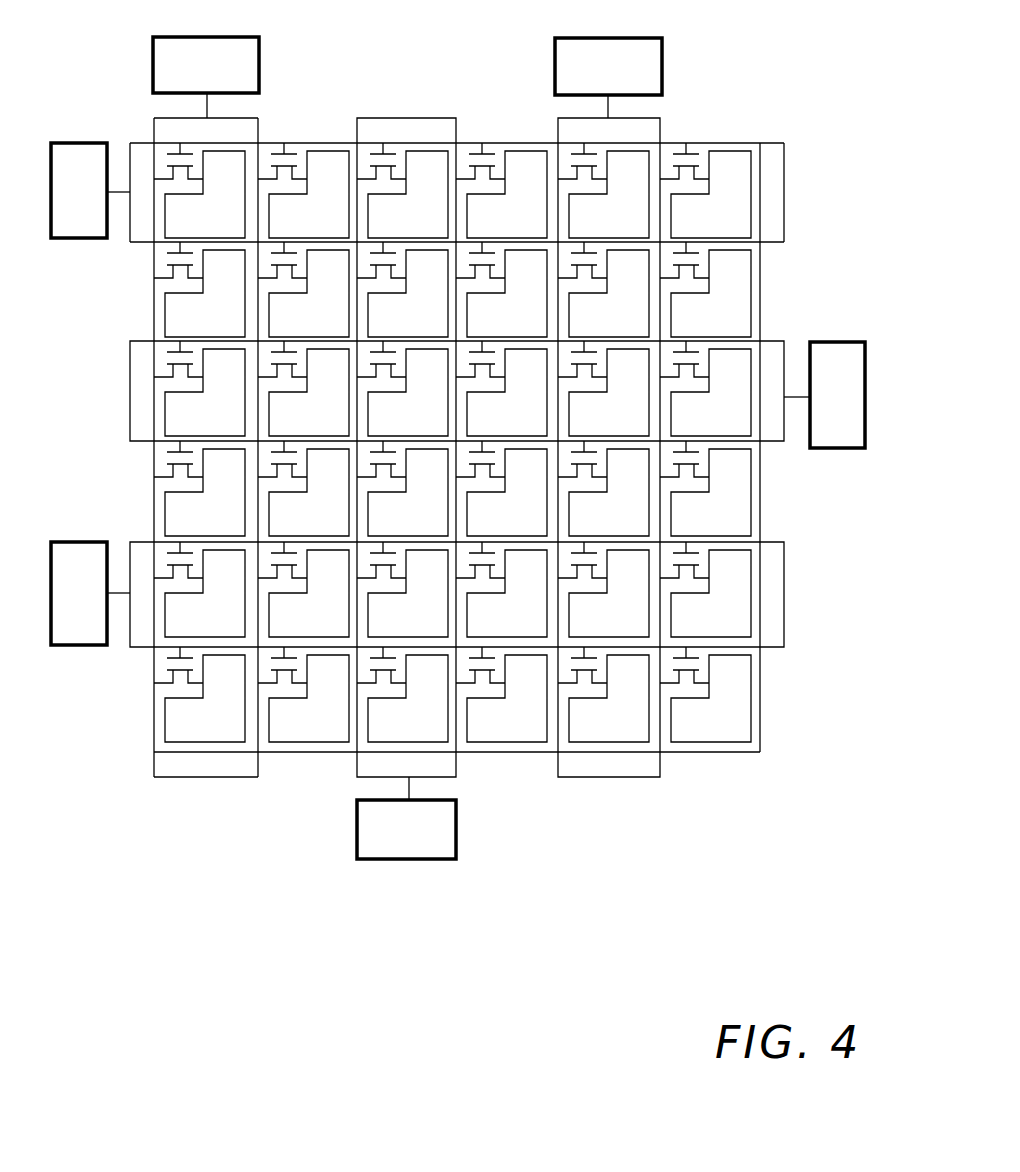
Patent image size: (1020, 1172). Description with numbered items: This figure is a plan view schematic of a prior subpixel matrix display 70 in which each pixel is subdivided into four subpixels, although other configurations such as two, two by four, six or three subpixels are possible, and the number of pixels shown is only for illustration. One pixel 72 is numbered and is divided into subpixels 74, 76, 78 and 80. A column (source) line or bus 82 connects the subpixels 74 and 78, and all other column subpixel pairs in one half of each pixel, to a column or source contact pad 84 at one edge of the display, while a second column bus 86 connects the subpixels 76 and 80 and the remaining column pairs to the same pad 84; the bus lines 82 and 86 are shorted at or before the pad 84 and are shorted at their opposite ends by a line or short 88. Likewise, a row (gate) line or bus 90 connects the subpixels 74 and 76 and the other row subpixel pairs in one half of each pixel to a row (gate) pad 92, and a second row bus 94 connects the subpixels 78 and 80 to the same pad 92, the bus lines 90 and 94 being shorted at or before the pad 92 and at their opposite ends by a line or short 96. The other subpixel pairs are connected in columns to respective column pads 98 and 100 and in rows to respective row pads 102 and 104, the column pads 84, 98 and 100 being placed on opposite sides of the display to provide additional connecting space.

The subpixel matrix display 70 is at (684, 93).
The pixel 72 is at (286, 127).
The subpixel 74 is at (222, 224).
The subpixel 76 is at (318, 224).
The subpixel 78 is at (222, 322).
The subpixel 80 is at (318, 322).
The column (source) line or bus 82 is at (154, 320).
The column or source contact pad 84 is at (218, 75).
The second column (source) line or bus 86 is at (262, 120).
The line or short 88 is at (173, 776).
The row (gate) line or bus 90 is at (340, 142).
The row (gate) pad 92 is at (92, 207).
The second row (gate) line or bus 94 is at (140, 243).
The line or short 96 is at (784, 177).
The column (source) pad 98 is at (418, 834).
The column (source) pad 100 is at (628, 74).
The row (gate) pad 102 is at (858, 408).
The row (gate) pad 104 is at (97, 605).